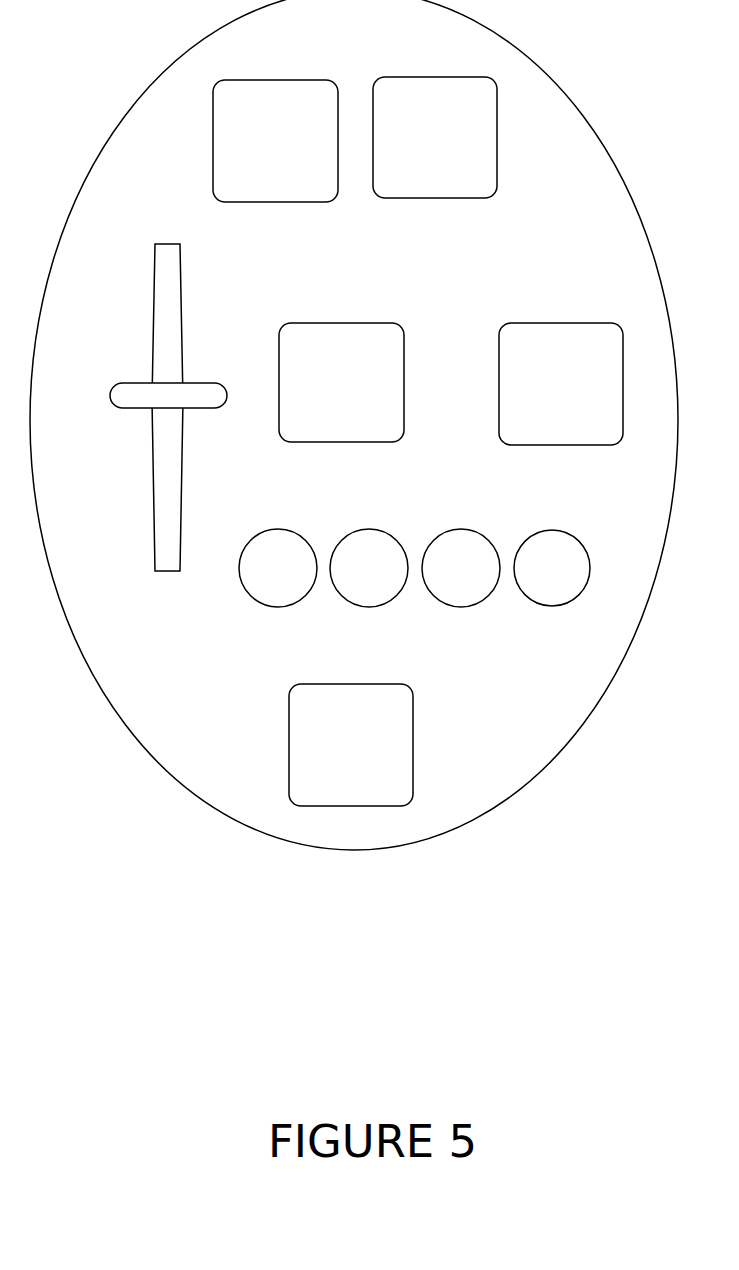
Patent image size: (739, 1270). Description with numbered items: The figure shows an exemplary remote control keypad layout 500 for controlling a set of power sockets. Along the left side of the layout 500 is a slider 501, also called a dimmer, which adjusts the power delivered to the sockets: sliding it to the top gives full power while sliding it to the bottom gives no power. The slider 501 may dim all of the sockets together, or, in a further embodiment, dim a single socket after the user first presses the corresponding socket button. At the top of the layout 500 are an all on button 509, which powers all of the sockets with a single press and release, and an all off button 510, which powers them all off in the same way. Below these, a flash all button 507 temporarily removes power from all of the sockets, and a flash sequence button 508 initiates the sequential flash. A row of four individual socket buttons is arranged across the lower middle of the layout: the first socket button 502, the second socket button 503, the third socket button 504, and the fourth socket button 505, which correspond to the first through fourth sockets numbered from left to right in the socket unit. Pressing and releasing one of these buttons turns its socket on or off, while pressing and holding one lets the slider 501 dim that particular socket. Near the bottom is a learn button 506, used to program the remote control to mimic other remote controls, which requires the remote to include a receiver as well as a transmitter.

The remote control keypad layout 500 is at (152, 758).
The slider 501 is at (127, 403).
The button 1 502 is at (245, 588).
The button 2 503 is at (358, 604).
The button 3 504 is at (467, 606).
The button 4 505 is at (568, 605).
The learn button 506 is at (288, 771).
The flash all button 507 is at (279, 356).
The flash sequence button 508 is at (498, 410).
The all on button 509 is at (213, 190).
The all off button 510 is at (505, 181).